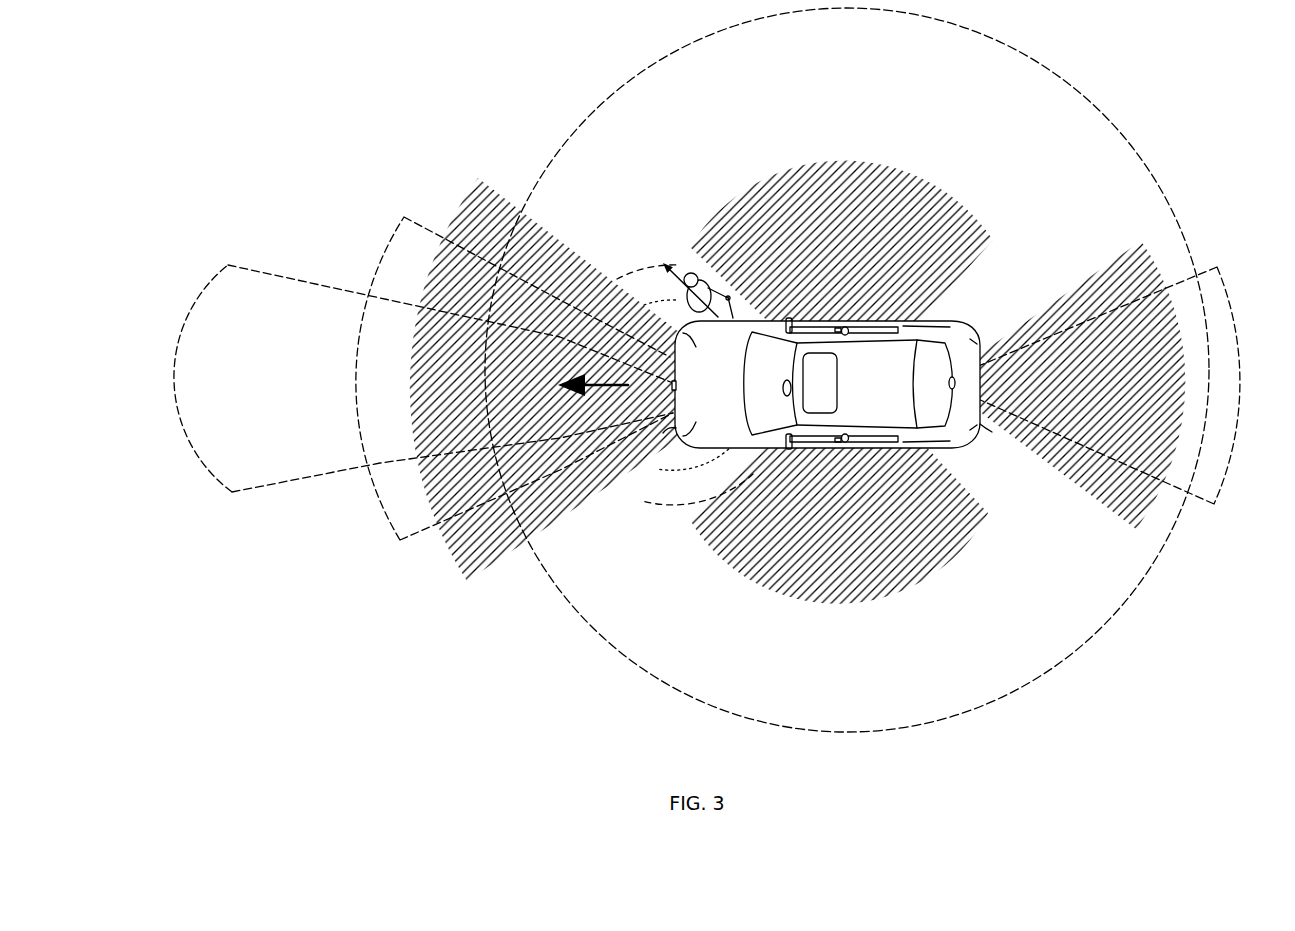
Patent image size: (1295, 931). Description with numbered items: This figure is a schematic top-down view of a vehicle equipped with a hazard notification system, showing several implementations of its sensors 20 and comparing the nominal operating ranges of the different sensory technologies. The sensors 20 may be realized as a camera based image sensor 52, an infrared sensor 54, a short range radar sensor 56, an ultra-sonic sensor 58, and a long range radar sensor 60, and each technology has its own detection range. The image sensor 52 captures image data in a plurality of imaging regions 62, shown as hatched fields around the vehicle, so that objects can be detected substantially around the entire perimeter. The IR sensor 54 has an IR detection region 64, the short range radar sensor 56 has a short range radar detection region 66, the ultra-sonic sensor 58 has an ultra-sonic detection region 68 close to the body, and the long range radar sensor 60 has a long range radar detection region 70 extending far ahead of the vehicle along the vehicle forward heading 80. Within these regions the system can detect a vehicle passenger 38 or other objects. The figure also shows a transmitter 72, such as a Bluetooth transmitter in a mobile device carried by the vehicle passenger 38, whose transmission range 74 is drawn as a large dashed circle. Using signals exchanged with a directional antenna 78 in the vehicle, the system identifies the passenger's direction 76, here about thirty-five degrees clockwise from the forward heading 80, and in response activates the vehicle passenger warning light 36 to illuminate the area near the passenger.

The sensors 20 is at (824, 386).
The vehicle passenger warning light 36 is at (685, 238).
The vehicle passenger 38 is at (685, 238).
The camera based image sensor 52 is at (883, 386).
The infrared sensor 54 is at (883, 403).
The short range radar sensor 56 is at (814, 493).
The ultra-sonic sensor 58 is at (657, 435).
The long range radar sensor 60 is at (672, 385).
The imaging regions 62 is at (478, 178).
The IR detection region 64 is at (404, 541).
The short range radar detection region 66 is at (670, 357).
The ultra-sonic detection region 68 is at (690, 470).
The long range radar detection region 70 is at (230, 494).
The transmitter 72 is at (688, 262).
The transmission range 74 is at (1046, 72).
The direction 76 is at (683, 270).
The directional antenna 78 is at (786, 392).
The vehicle forward heading 80 is at (501, 565).